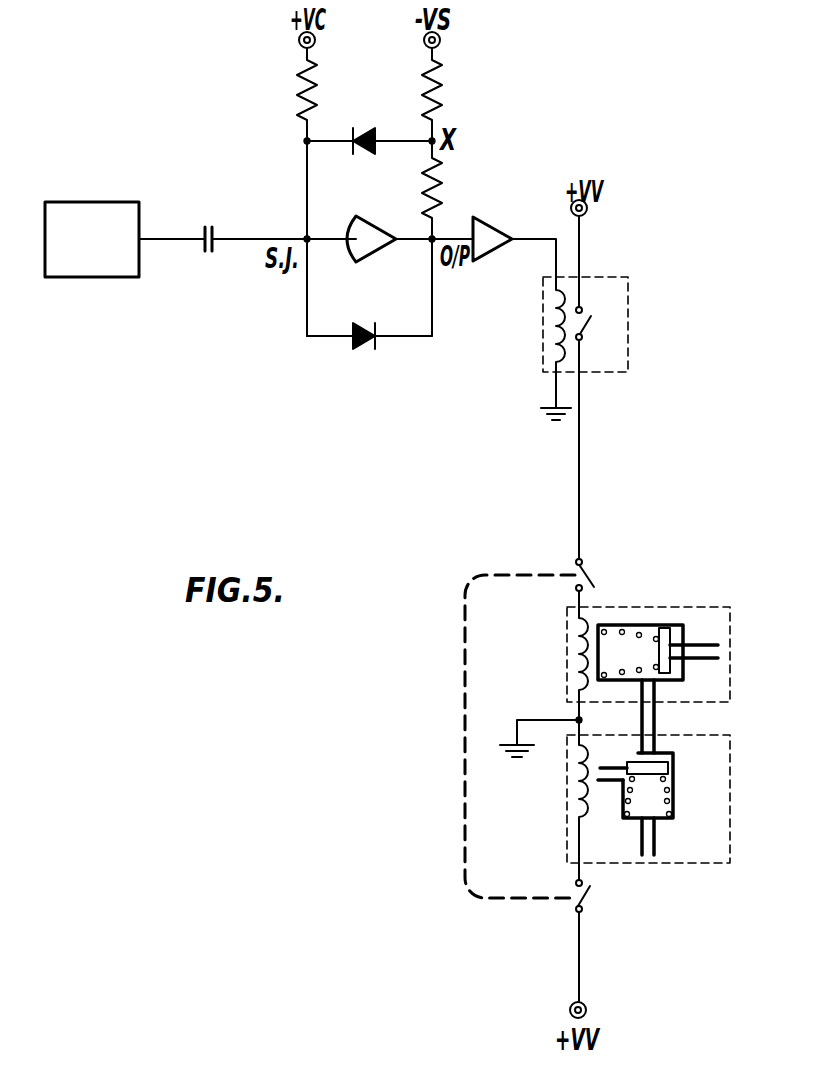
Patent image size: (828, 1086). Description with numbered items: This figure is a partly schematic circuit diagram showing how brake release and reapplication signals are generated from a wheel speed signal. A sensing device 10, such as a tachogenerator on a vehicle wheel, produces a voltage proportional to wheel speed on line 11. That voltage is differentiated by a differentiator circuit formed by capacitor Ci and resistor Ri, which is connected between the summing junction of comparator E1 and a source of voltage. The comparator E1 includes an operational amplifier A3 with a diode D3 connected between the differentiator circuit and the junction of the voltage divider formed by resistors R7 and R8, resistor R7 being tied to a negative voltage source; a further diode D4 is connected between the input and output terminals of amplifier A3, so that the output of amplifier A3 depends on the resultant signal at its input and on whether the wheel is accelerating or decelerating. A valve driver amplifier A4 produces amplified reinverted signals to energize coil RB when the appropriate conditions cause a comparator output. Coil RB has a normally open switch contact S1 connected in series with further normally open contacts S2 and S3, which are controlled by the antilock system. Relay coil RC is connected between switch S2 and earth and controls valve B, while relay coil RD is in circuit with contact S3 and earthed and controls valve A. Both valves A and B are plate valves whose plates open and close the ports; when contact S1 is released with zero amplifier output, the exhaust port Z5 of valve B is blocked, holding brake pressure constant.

The sensing device 10 is at (100, 277).
The line 11 is at (160, 240).
The capacitor Ci is at (209, 226).
The resistor Ri is at (318, 90).
The resistor R7 is at (440, 94).
The resistor R8 is at (440, 190).
The diode D3 is at (364, 130).
The further diode D4 is at (360, 345).
The operational amplifier A3 is at (372, 232).
The valve driver amplifier A4 is at (498, 232).
The comparator E1 is at (400, 306).
The coil RB is at (545, 320).
The relay coil RC is at (567, 654).
The relay coil RD is at (567, 795).
The switch contact S1 is at (588, 324).
The switch contact S2 is at (592, 578).
The switch contact S3 is at (590, 897).
The exhaust port Z5 is at (702, 648).
The valve A is at (675, 811).
The valve B is at (686, 676).